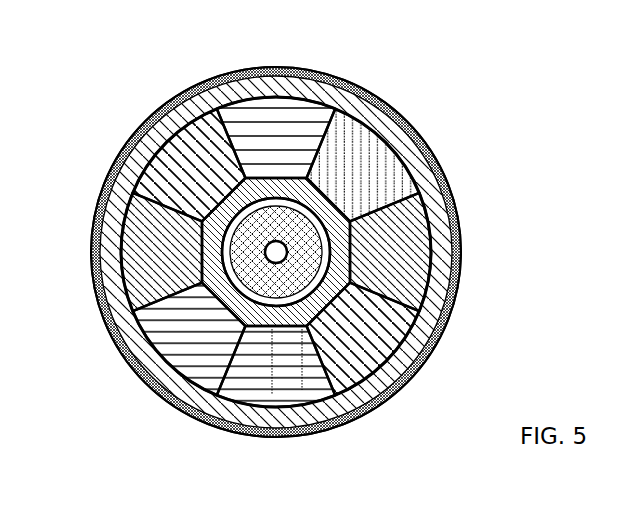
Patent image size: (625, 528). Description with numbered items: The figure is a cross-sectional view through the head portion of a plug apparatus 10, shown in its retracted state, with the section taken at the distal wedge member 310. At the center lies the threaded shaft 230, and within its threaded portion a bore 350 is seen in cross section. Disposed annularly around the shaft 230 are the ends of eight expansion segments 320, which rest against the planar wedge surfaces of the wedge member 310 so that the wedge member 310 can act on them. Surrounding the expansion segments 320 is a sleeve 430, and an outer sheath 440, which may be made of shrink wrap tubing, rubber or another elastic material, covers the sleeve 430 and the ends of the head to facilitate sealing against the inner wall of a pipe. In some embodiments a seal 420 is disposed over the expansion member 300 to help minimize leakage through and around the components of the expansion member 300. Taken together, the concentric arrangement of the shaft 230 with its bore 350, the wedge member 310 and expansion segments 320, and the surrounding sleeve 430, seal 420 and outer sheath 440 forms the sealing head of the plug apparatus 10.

The plug apparatus 10 is at (455, 58).
The shaft 230 is at (307, 232).
The expansion member 300 is at (254, 249).
The distal wedge member 310 is at (227, 290).
The expansion segments 320 is at (290, 387).
The bore 350 is at (265, 252).
The seal 420 is at (398, 370).
The sleeve 430 is at (442, 324).
The outer sheath 440 is at (462, 247).